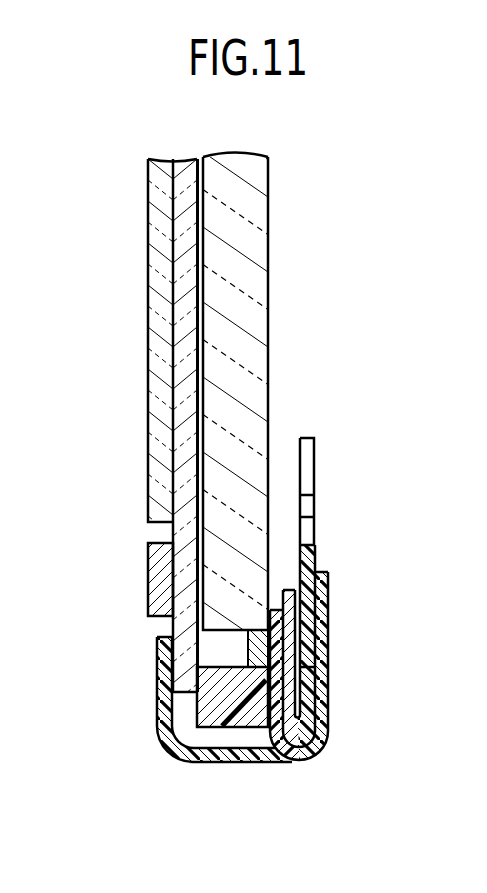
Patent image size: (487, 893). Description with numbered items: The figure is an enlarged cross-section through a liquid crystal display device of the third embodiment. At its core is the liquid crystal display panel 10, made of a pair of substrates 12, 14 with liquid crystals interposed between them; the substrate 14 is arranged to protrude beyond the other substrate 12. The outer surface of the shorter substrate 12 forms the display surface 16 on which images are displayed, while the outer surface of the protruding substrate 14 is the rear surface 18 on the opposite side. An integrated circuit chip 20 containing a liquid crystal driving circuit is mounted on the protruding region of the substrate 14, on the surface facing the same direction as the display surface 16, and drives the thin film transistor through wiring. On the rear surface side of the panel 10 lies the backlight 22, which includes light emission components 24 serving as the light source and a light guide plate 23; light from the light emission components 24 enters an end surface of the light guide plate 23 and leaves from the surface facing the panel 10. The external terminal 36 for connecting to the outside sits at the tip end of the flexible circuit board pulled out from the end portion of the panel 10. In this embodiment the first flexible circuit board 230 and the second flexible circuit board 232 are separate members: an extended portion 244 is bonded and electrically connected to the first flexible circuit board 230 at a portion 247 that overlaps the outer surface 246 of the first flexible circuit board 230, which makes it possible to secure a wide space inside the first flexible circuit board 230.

The liquid crystal display panel 10 is at (128, 245).
The substrate 12 is at (158, 440).
The substrate 14 is at (174, 492).
The display surface 16 is at (148, 364).
The rear surface 18 is at (195, 337).
The integrated circuit chip 20 is at (152, 583).
The backlight 22 is at (334, 412).
The light guide plate 23 is at (268, 402).
The light emission components 24 is at (254, 630).
The external terminal 36 is at (314, 480).
The first flexible circuit board 230 is at (314, 562).
The second flexible circuit board 232 is at (314, 672).
The extended portion 244 is at (308, 762).
The outer surface 246 is at (328, 637).
The portion 247 is at (328, 597).